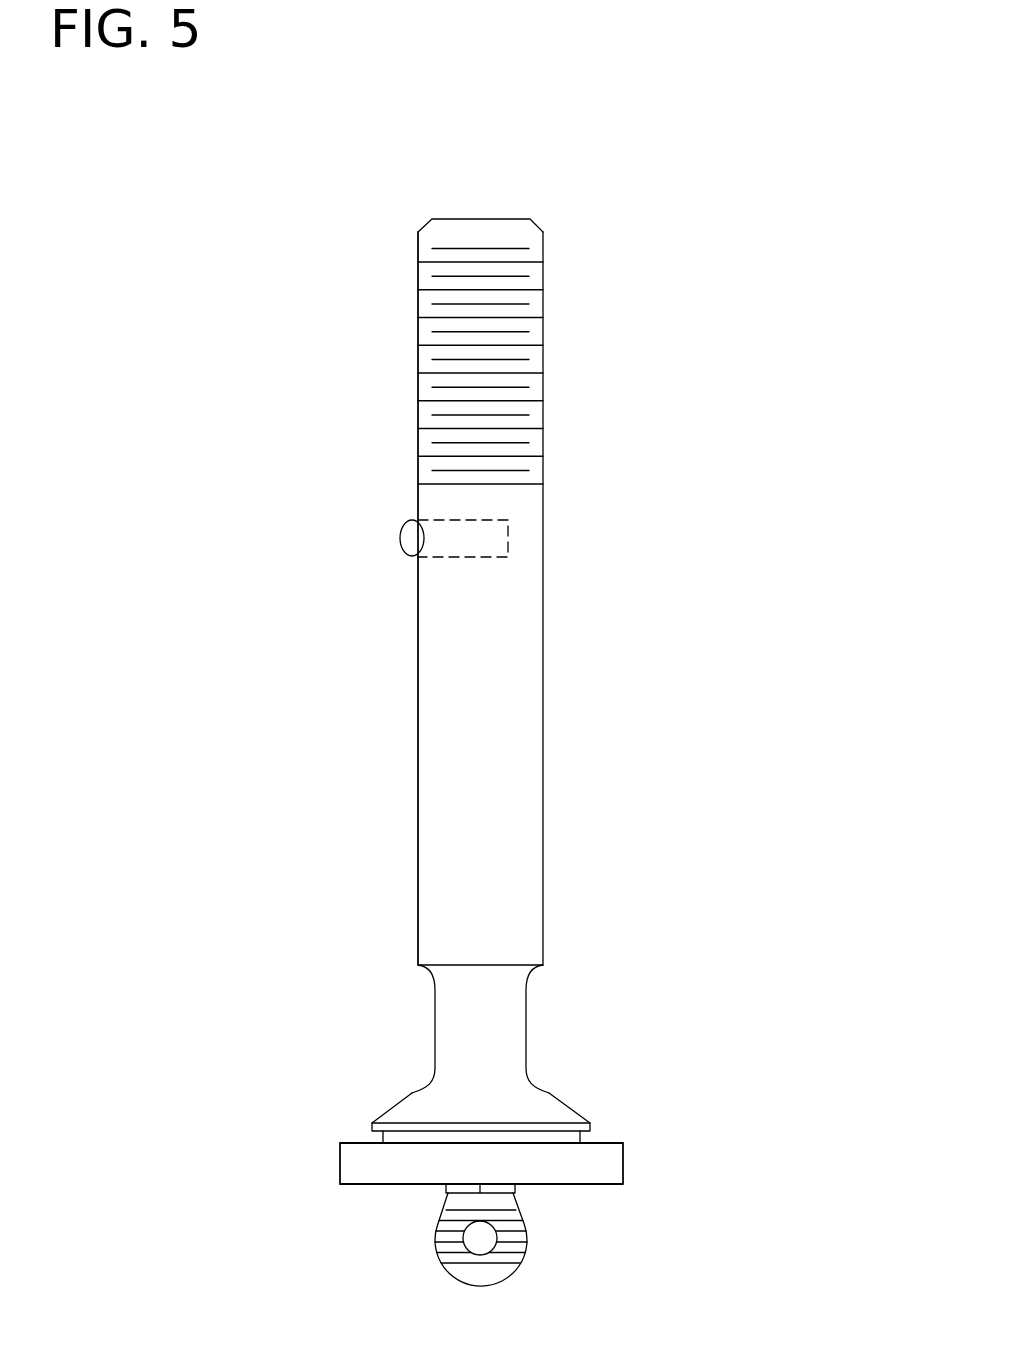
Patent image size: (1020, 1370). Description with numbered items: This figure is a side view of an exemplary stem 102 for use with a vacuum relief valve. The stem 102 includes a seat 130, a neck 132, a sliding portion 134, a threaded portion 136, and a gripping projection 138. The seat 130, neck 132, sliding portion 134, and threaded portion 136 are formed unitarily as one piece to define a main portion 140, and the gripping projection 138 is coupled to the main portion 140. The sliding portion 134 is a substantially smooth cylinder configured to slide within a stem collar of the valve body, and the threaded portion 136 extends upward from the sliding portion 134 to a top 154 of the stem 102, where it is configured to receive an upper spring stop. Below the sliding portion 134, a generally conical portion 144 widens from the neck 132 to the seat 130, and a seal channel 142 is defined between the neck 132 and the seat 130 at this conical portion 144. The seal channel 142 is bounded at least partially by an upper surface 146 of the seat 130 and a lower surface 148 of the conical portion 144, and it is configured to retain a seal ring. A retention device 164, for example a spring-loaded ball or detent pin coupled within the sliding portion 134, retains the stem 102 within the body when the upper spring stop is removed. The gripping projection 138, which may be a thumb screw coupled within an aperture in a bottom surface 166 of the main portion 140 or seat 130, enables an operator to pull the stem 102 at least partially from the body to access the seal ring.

The stem 102 is at (668, 1000).
The seat 130 is at (353, 1166).
The neck 132 is at (445, 1018).
The sliding portion 134 is at (433, 727).
The threaded portion 136 is at (425, 352).
The gripping projection 138 is at (450, 1255).
The main portion 140 is at (565, 775).
The seal channel 142 is at (590, 1137).
The conical portion 144 is at (542, 1102).
The upper surface 146 is at (350, 1143).
The lower surface 148 is at (380, 1128).
The top 154 is at (467, 219).
The retention device 164 is at (455, 548).
The bottom surface 166 is at (583, 1184).